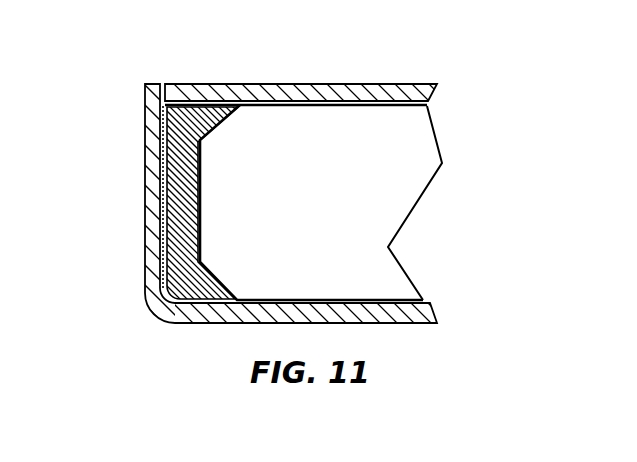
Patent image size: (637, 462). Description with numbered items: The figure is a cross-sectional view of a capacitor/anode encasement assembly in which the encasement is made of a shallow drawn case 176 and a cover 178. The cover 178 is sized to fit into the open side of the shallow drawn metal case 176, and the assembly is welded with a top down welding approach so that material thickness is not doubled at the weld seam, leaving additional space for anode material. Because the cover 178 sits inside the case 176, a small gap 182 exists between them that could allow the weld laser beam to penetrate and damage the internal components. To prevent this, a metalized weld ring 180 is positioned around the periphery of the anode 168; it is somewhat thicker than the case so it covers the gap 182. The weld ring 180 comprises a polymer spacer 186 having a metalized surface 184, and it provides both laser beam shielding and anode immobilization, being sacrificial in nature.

The anode 168 is at (343, 182).
The shallow drawn case 176 is at (153, 193).
The cover 178 is at (330, 90).
The metalized weld ring 180 is at (178, 320).
The gap 182 is at (162, 84).
The metalized surface 184 is at (150, 87).
The polymer spacer 186 is at (152, 305).